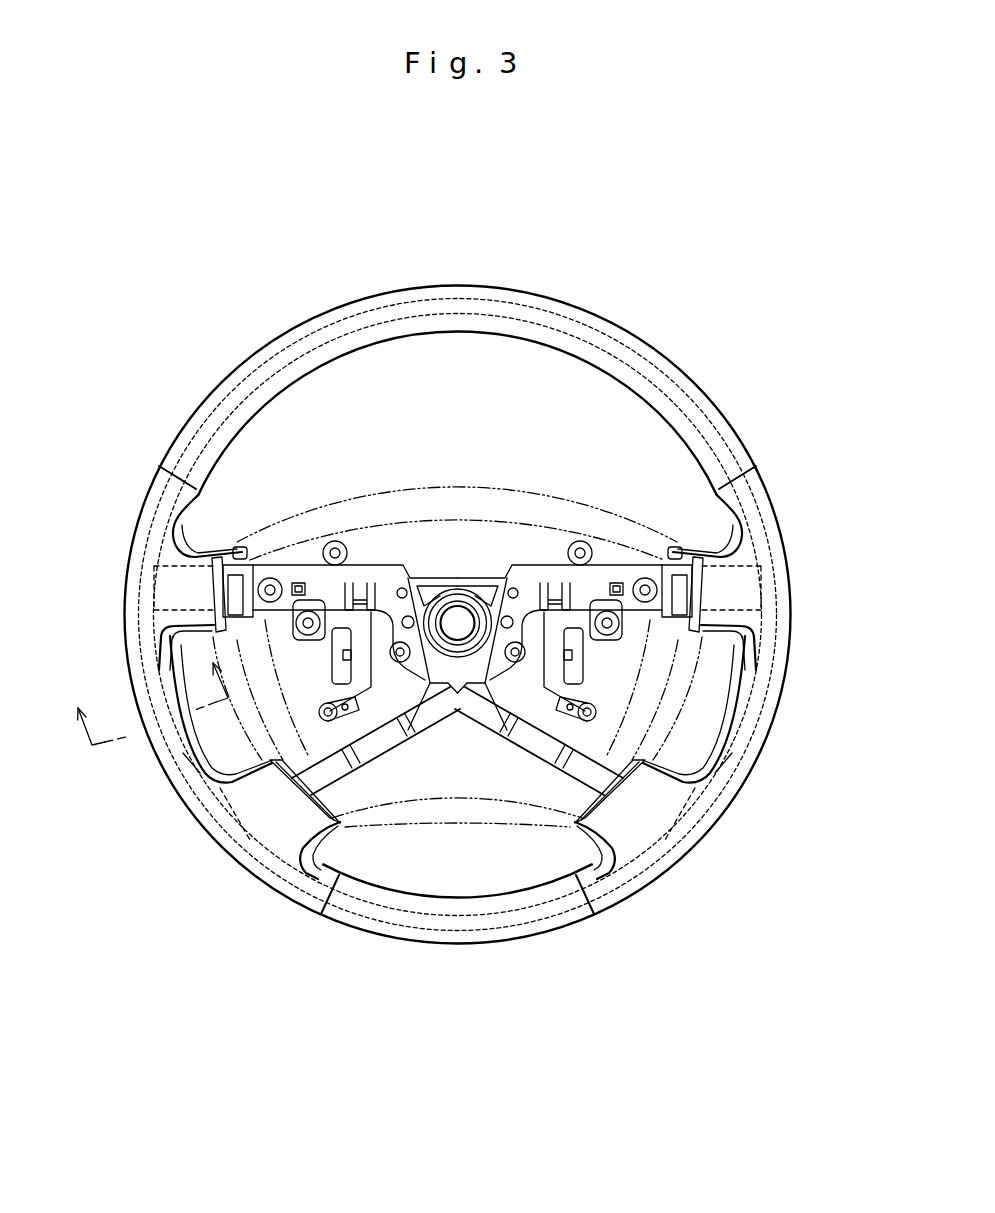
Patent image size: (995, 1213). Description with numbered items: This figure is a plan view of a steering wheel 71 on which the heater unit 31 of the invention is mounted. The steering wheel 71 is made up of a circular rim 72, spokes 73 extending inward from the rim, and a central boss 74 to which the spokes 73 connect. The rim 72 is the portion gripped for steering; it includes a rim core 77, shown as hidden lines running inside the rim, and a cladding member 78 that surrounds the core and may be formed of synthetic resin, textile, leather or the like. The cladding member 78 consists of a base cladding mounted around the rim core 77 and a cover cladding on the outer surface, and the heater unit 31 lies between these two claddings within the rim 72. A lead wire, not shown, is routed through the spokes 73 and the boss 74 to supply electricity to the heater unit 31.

The steering wheel 71 is at (256, 266).
The rim 72 is at (122, 515).
The spokes 73 is at (251, 513).
The boss 74 is at (467, 470).
The rim core 77 is at (406, 302).
The cladding member 78 is at (122, 596).
The heater unit 31 is at (188, 808).